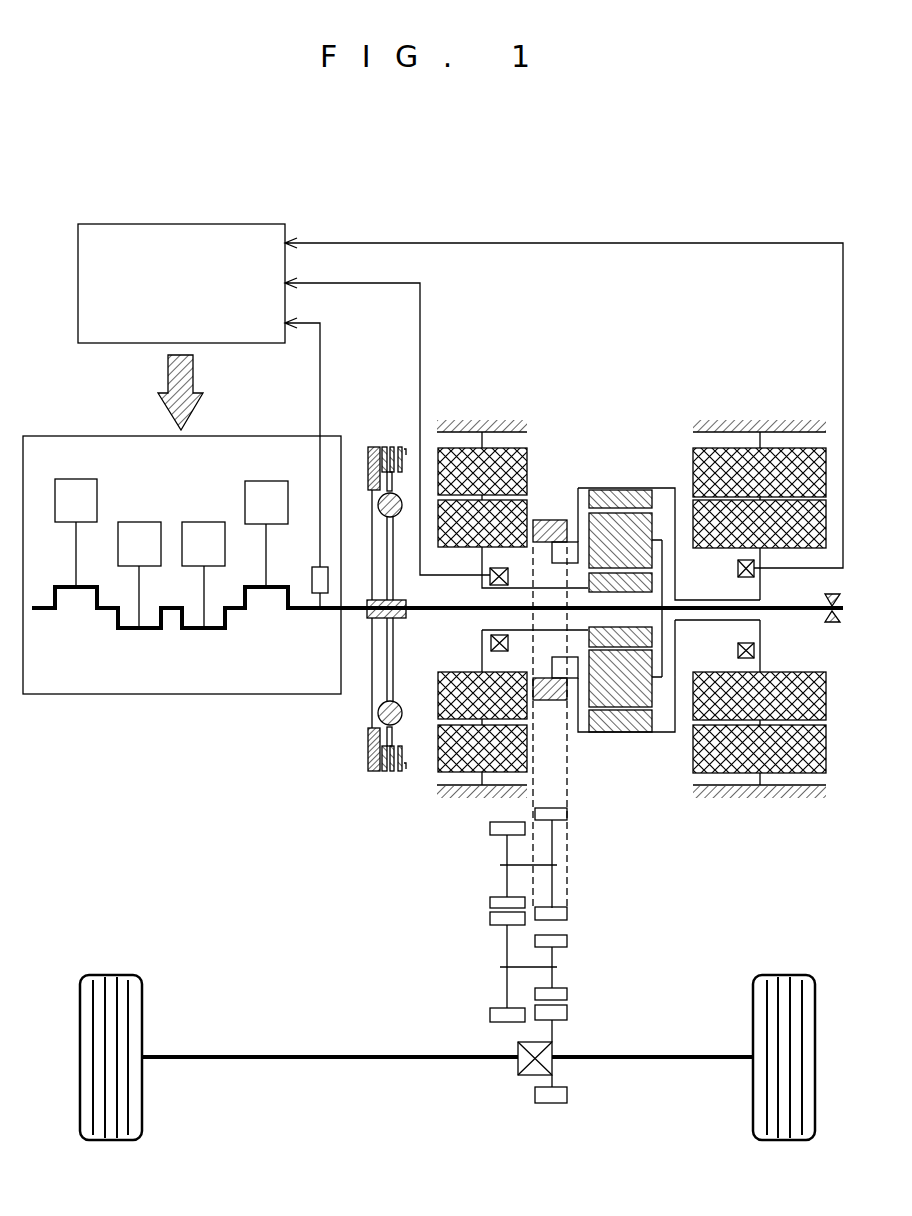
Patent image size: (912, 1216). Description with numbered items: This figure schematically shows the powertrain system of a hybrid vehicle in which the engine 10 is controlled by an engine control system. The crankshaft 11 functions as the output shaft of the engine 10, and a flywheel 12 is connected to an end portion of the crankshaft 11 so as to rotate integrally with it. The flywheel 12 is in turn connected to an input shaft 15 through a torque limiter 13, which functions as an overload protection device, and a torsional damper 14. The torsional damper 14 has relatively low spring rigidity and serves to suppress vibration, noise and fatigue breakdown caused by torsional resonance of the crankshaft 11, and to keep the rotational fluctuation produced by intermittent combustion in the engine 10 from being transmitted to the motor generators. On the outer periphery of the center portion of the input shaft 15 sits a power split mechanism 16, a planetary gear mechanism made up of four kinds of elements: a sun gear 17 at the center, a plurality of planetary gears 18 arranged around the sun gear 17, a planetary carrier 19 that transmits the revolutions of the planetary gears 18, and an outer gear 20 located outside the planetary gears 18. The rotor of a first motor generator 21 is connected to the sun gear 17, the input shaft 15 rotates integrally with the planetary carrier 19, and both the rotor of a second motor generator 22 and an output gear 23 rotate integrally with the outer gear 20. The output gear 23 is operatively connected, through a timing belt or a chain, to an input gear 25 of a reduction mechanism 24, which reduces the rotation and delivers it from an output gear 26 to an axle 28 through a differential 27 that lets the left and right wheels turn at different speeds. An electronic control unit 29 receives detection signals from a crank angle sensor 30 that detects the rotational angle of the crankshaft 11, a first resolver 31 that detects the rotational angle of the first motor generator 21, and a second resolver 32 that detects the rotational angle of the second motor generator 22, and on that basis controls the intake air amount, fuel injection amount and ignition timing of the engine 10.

The engine 10 is at (433, 597).
The crankshaft 11 is at (238, 612).
The flywheel 12 is at (367, 638).
The torque limiter 13 is at (410, 765).
The torsional damper 14 is at (395, 700).
The input shaft 15 is at (790, 613).
The power split mechanism 16 is at (669, 587).
The sun gear 17 is at (653, 577).
The planetary gears 18 is at (660, 517).
The planetary carrier 19 is at (665, 678).
The outer gear 20 is at (582, 733).
The first motor generator 21 is at (528, 462).
The second motor generator 22 is at (826, 740).
The output gear 23 is at (545, 520).
The reduction mechanism 24 is at (552, 960).
The input gear 25 is at (568, 813).
The output gear 26 is at (568, 992).
The differential 27 is at (518, 1063).
The axle 28 is at (328, 1060).
The electronic control unit 29 is at (228, 343).
The crank angle sensor 30 is at (321, 612).
The first resolver 31 is at (480, 578).
The second resolver 32 is at (737, 650).